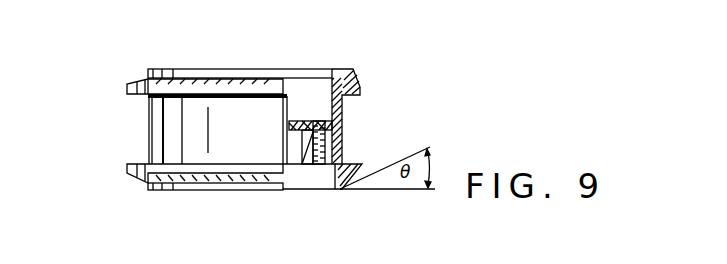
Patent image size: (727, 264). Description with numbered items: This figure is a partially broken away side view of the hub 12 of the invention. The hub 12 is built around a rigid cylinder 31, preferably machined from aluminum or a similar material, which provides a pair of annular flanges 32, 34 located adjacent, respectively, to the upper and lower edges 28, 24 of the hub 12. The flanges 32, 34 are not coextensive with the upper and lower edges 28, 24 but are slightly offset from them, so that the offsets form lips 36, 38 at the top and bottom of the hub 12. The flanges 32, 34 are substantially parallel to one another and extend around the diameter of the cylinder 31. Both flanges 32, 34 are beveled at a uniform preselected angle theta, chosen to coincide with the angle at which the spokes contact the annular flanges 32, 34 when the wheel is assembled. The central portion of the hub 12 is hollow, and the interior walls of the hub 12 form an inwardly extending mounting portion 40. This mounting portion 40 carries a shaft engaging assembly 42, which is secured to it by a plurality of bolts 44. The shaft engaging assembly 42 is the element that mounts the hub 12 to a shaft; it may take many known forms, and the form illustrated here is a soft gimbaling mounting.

The hub 12 is at (352, 149).
The lower edge 24 is at (347, 195).
The upper edge 28 is at (171, 69).
The rigid cylinder 31 is at (148, 125).
The annular flange 32 is at (127, 90).
The annular flange 34 is at (128, 170).
The lip 36 is at (226, 72).
The lip 38 is at (237, 190).
The mounting portion 40 is at (299, 148).
The shaft engaging assembly 42 is at (301, 106).
The bolts 44 is at (330, 127).